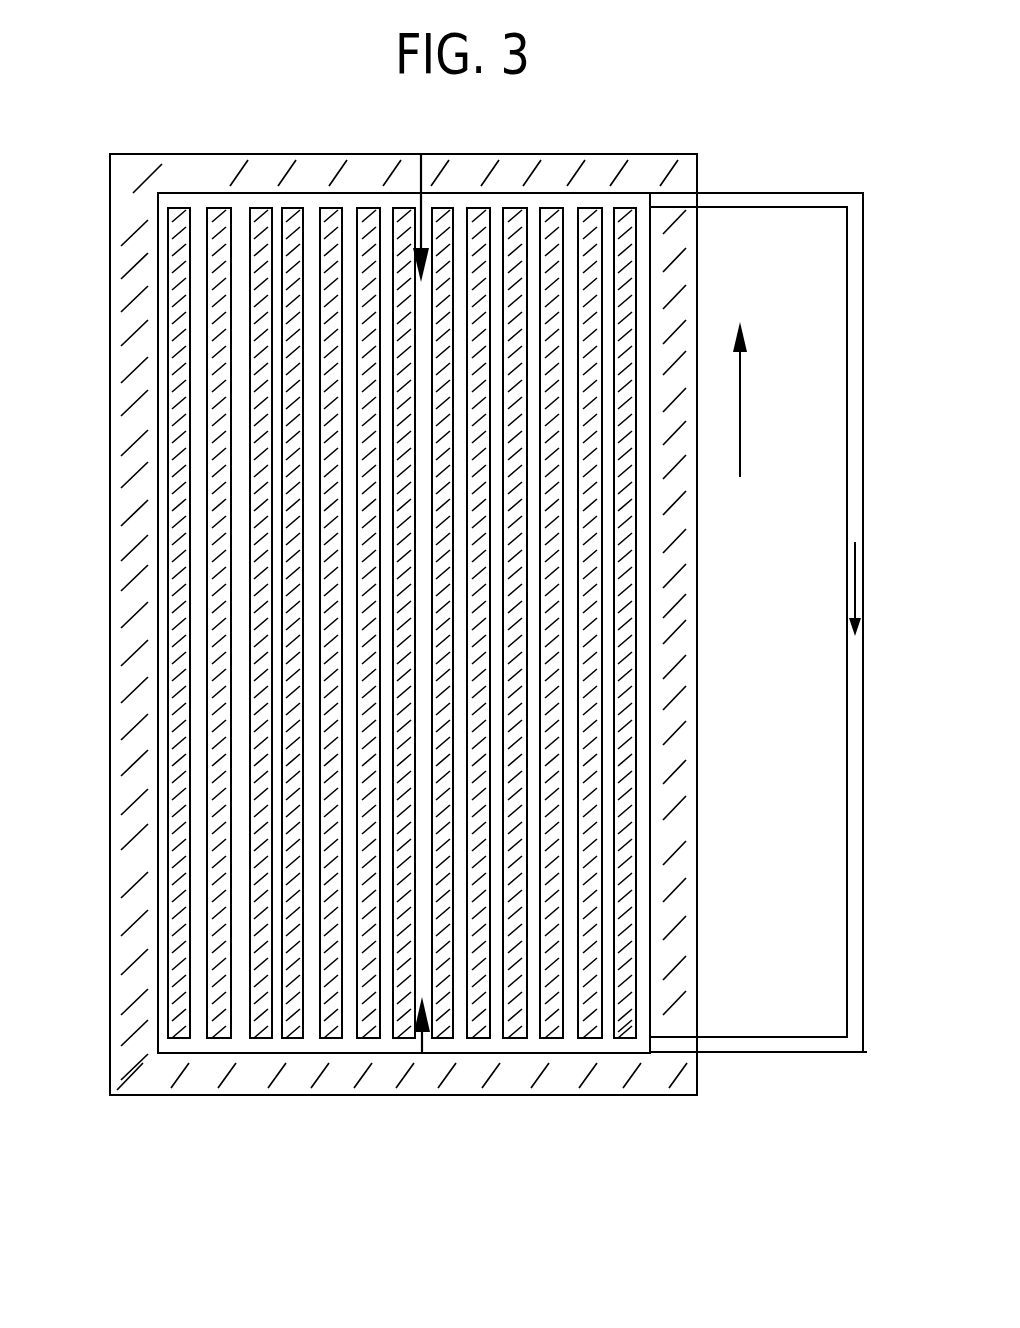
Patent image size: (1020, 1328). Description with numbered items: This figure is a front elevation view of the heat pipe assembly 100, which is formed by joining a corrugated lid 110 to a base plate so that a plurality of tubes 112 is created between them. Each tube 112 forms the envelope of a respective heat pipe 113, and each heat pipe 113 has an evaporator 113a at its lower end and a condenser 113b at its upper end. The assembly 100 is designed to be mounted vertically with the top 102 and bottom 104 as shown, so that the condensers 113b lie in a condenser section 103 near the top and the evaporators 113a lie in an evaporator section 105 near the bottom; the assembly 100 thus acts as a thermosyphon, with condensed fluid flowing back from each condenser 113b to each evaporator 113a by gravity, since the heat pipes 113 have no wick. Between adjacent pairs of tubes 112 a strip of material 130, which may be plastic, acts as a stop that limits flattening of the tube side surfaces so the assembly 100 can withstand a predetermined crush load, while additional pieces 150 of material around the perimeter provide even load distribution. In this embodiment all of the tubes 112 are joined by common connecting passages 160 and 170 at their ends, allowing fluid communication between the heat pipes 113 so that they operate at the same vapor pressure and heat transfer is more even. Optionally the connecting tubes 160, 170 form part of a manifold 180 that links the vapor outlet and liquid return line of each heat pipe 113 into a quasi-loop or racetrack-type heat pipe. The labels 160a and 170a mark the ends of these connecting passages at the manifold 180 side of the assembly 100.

The heat pipe assembly 100 is at (815, 683).
The top 102 is at (598, 152).
The condenser section 103 is at (421, 155).
The bottom 104 is at (293, 1097).
The evaporator section 105 is at (422, 1053).
The corrugated lid 110 is at (568, 1053).
The tubes 112 is at (460, 548).
The heat pipe 113 is at (712, 623).
The evaporator 113a is at (615, 1010).
The condenser 113b is at (618, 240).
The strip of material 130 is at (180, 975).
The additional pieces of material 150 is at (455, 1098).
The common connecting passage 160 is at (312, 200).
The extension top 160a is at (818, 200).
The common connecting passage 170 is at (347, 1058).
The extension bottom 170a is at (795, 1057).
The manifold 180 is at (832, 560).